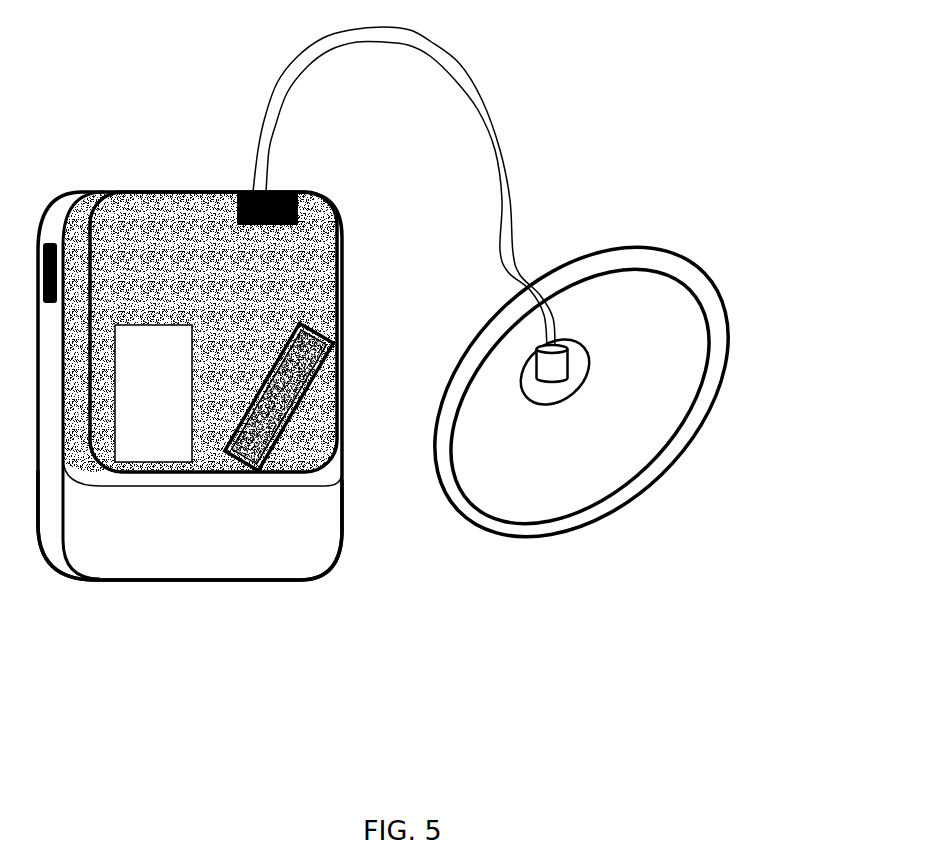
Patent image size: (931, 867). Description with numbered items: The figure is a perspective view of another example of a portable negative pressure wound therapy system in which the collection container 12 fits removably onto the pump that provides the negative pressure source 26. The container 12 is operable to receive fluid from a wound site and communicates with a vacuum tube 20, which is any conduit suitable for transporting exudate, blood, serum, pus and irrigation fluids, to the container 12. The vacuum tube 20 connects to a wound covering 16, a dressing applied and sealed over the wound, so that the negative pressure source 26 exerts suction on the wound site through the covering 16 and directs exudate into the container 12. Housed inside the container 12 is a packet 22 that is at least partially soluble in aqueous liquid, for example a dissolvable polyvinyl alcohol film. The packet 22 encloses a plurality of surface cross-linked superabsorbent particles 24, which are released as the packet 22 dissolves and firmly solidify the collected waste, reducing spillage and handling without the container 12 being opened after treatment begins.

The container 12 is at (162, 222).
The wound covering 16 is at (582, 391).
The vacuum tube 20 is at (457, 62).
The packet 22 is at (295, 412).
The surface cross-linked superabsorbent particles 24 is at (298, 352).
The negative pressure source 26 is at (273, 530).